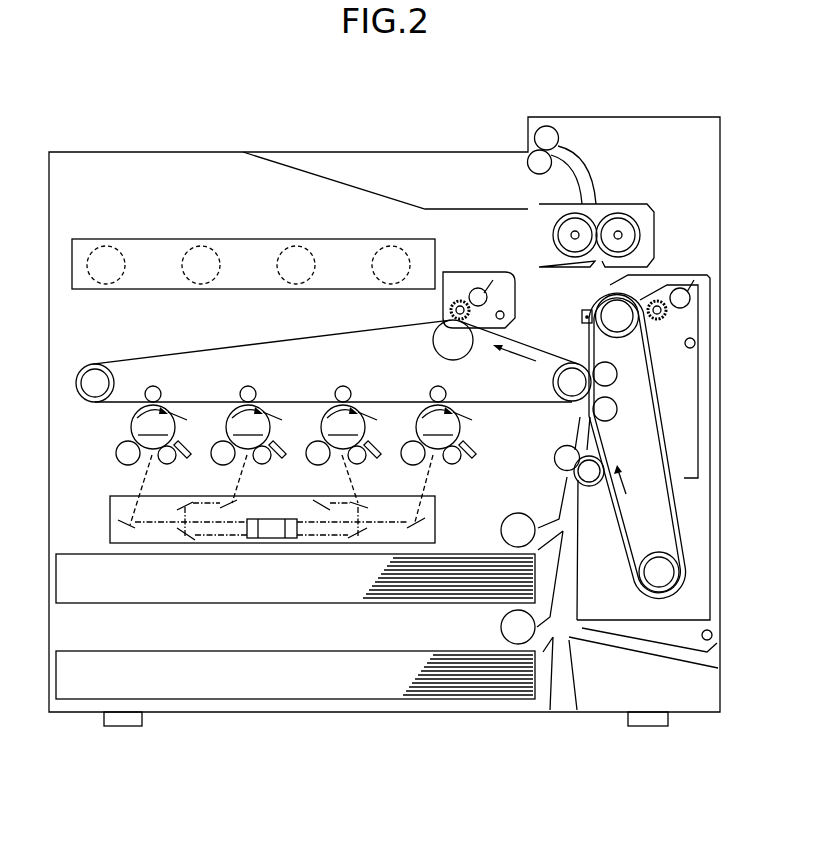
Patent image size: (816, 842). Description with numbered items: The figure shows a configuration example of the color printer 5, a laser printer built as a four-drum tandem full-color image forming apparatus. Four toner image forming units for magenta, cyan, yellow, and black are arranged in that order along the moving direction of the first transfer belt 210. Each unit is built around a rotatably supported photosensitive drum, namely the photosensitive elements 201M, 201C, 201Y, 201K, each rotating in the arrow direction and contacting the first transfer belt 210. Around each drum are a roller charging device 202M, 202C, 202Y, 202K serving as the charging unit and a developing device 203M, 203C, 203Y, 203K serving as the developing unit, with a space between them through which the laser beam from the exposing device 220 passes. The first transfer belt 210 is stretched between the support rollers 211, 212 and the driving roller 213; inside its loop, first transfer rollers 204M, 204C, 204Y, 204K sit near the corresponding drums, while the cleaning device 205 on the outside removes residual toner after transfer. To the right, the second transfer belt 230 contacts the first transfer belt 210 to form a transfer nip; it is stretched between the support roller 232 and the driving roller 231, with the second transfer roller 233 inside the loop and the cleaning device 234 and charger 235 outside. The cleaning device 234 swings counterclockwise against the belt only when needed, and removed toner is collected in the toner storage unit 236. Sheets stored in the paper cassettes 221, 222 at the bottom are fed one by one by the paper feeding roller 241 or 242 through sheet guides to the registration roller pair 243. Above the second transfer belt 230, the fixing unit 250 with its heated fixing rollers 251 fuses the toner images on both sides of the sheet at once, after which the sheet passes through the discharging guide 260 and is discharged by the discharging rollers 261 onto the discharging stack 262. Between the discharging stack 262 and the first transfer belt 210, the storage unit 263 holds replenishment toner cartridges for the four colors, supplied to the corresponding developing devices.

The color printer 5 is at (376, 130).
The magenta photosensitive element 201M is at (160, 465).
The cyan photosensitive element 201C is at (256, 454).
The yellow photosensitive element 201Y is at (351, 454).
The black photosensitive element 201K is at (445, 463).
The roller charging device 202M is at (166, 465).
The roller charging device 202C is at (261, 465).
The roller charging device 202Y is at (356, 465).
The roller charging device 202K is at (451, 465).
The developing device 203M is at (123, 466).
The developing device 203C is at (218, 466).
The developing device 203Y is at (313, 466).
The developing device 203K is at (408, 466).
The first transfer roller 204M is at (161, 390).
The first transfer roller 204C is at (256, 390).
The first transfer roller 204Y is at (351, 390).
The first transfer roller 204K is at (446, 390).
The cleaning device 205 is at (478, 272).
The first transfer belt 210 is at (243, 343).
The support roller 211 is at (90, 366).
The support roller 212 is at (433, 343).
The driving roller 213 is at (553, 383).
The exposing device 220 is at (110, 521).
The paper cassette 221 is at (222, 603).
The paper cassette 222 is at (252, 700).
The second transfer belt 230 is at (628, 542).
The driving roller 231 is at (661, 552).
The support roller 232 is at (618, 337).
The second transfer roller 233 is at (617, 388).
The cleaning device 234 is at (664, 296).
The charger 235 is at (582, 317).
The toner storage unit 236 is at (684, 479).
The paper feeding roller 241 is at (501, 530).
The paper feeding roller 242 is at (501, 627).
The registration roller pair 243 is at (554, 453).
The fixing unit 250 is at (630, 200).
The fixing rollers 251 is at (642, 233).
The discharging guide 260 is at (586, 171).
The discharging rollers 261 is at (526, 146).
The discharging stack 262 is at (373, 191).
The storage unit 263 is at (288, 239).